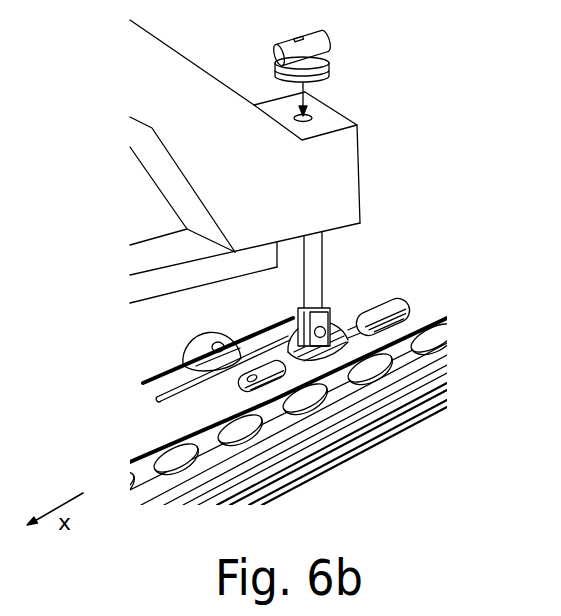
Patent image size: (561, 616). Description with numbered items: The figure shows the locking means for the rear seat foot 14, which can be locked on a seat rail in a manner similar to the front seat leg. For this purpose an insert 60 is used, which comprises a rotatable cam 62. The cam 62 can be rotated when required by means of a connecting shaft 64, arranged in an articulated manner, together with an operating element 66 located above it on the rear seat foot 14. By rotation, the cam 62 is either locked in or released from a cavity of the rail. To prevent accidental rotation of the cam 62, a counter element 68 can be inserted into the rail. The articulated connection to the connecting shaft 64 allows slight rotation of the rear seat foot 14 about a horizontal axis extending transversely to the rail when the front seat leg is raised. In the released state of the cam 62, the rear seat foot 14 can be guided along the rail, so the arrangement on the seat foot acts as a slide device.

The rear seat foot 14 is at (312, 178).
The insert 60 is at (398, 302).
The rotatable cam 62 is at (352, 317).
The connecting shaft 64 is at (320, 245).
The operating element 66 is at (317, 45).
The counter element 68 is at (185, 355).